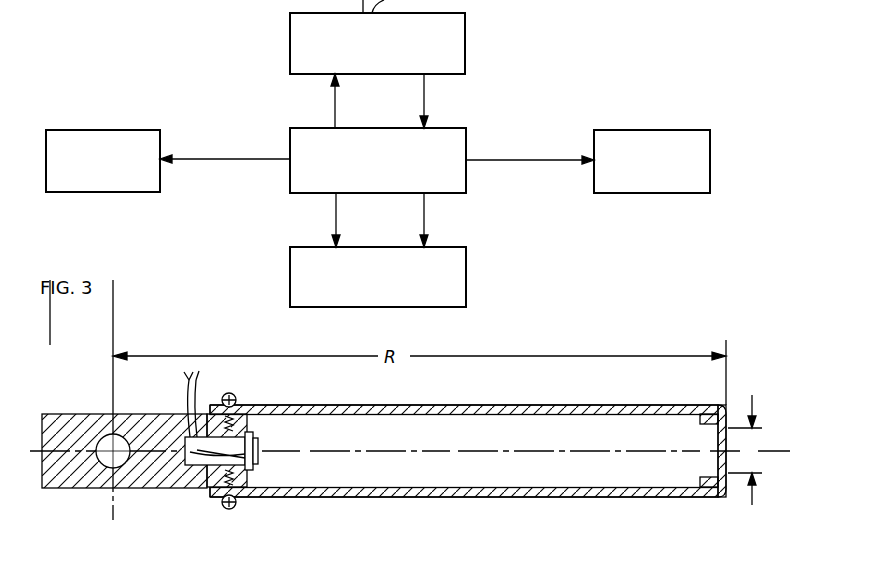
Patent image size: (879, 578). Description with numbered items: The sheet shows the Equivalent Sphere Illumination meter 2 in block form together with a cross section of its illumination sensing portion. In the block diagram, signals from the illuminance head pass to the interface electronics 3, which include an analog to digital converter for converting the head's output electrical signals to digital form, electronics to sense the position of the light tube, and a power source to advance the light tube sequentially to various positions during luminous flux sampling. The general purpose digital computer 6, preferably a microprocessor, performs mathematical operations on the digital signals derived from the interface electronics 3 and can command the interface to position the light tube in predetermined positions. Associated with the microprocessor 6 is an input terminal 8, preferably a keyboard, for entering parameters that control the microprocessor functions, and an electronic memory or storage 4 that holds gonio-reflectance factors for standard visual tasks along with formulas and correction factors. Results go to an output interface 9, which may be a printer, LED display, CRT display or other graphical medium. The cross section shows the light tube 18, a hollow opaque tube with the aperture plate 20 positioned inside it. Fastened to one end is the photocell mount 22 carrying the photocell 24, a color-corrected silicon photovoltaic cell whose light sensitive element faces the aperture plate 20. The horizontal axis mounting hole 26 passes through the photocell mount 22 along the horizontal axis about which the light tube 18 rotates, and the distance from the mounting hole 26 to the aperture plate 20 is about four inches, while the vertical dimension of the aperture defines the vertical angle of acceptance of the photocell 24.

In FIG. 1, the Equivalent Sphere Illumination meter 2 is at (602, 36).
In FIG. 1, the interface electronics 3 is at (458, 38).
In FIG. 1, the electronic memory 4 is at (457, 268).
In FIG. 1, the general purpose digital computer 6 is at (447, 137).
In FIG. 1, the input terminal 8 is at (147, 141).
In FIG. 1, the output interface 9 is at (701, 148).
In FIG. 3, the light tube 18 is at (627, 496).
In FIG. 3, the aperture plate 20 is at (729, 416).
In FIG. 3, the photocell mount 22 is at (140, 490).
In FIG. 3, the photocell 24 is at (256, 440).
In FIG. 3, the horizontal axis mounting hole 26 is at (108, 462).